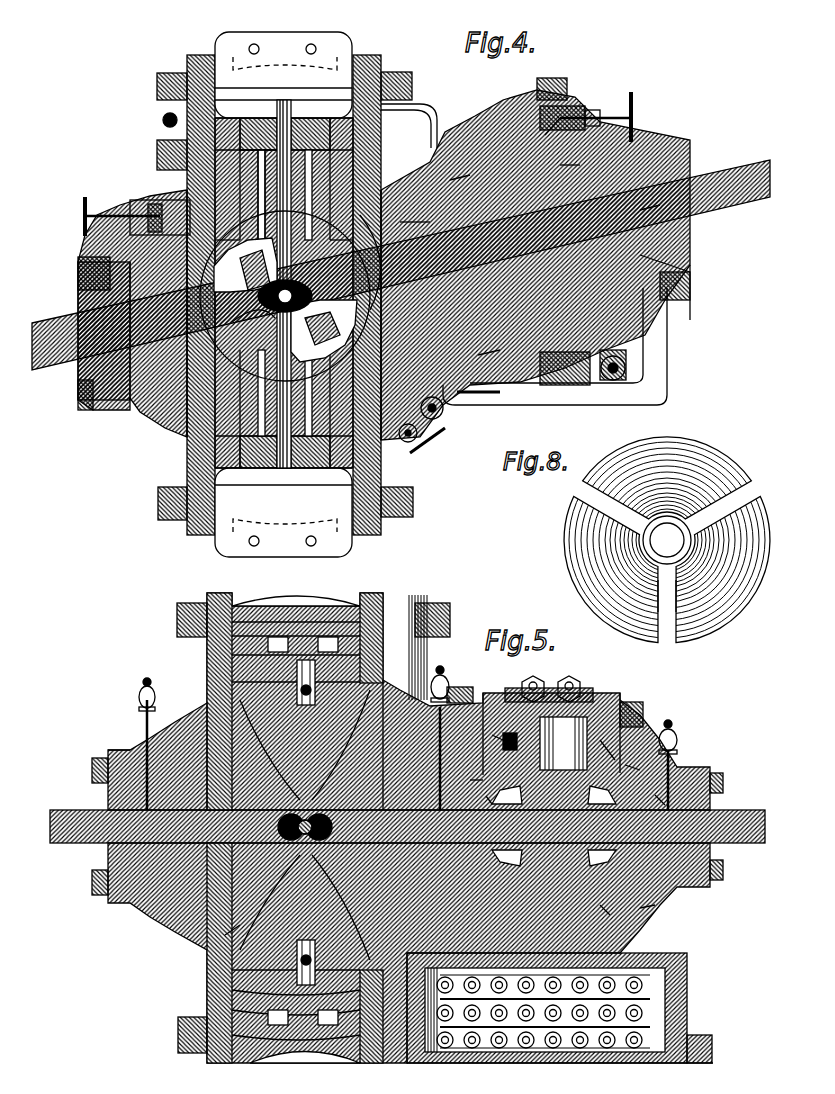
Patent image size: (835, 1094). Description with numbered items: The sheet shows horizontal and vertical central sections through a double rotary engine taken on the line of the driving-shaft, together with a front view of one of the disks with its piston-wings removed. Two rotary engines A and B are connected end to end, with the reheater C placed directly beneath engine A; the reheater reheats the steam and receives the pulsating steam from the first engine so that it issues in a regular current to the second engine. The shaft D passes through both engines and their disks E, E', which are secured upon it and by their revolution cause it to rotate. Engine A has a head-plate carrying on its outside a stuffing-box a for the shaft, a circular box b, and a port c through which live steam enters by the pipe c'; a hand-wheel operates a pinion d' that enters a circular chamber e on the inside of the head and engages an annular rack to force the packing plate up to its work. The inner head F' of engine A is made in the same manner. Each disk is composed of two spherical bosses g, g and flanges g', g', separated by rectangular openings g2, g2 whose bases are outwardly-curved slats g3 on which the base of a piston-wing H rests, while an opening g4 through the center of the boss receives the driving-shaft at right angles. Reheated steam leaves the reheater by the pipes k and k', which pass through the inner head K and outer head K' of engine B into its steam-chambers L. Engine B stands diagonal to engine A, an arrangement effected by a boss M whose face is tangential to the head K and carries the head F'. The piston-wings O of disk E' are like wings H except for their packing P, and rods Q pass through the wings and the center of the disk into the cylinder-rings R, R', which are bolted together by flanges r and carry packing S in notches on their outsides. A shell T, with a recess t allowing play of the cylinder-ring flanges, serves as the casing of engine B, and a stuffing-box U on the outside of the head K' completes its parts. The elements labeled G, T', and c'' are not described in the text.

In FIG. 4, the rotary engine A is at (566, 241).
In FIG. 5, the rotary engine A is at (551, 711).
In FIG. 4, the rotary engine B is at (384, 269).
In FIG. 5, the rotary engine B is at (407, 814).
In FIG. 5, the reheater C is at (560, 1008).
In FIG. 4, the shaft D is at (401, 265).
In FIG. 5, the shaft D is at (407, 826).
In FIG. 4, the disk E is at (366, 277).
In FIG. 8, the disk E is at (534, 513).
In FIG. 5, the disk E is at (305, 745).
In FIG. 4, the disk E' is at (250, 349).
In FIG. 5, the disk E' is at (305, 868).
In FIG. 5, the spindle G is at (306, 822).
In FIG. 4, the piston-wing H is at (489, 357).
In FIG. 5, the piston-wing H is at (545, 743).
In FIG. 4, the inner head K is at (363, 296).
In FIG. 5, the inner head K is at (393, 797).
In FIG. 4, the outer head K' is at (197, 299).
In FIG. 5, the outer head K' is at (198, 808).
In FIG. 4, the steam-chamber L is at (104, 331).
In FIG. 5, the steam-chamber L is at (119, 805).
In FIG. 4, the boss M is at (408, 265).
In FIG. 5, the boss M is at (466, 837).
In FIG. 4, the piston-wing O is at (284, 276).
In FIG. 4, the packing P is at (284, 289).
In FIG. 4, the rod Q is at (284, 295).
In FIG. 4, the cylinder-ring R is at (275, 295).
In FIG. 5, the cylinder-ring R' is at (296, 829).
In FIG. 4, the packing S is at (284, 295).
In FIG. 5, the shell T is at (296, 826).
In FIG. 4, the end cap T' is at (283, 294).
In FIG. 5, the stuffing-box U is at (226, 934).
In FIG. 4, the inner head F' is at (452, 244).
In FIG. 5, the inner head F' is at (550, 820).
In FIG. 4, the stuffing-box a is at (647, 206).
In FIG. 5, the stuffing-box a is at (656, 824).
In FIG. 4, the circular box b is at (604, 211).
In FIG. 5, the circular box b is at (626, 819).
In FIG. 4, the port c is at (595, 100).
In FIG. 5, the port c is at (603, 904).
In FIG. 5, the pipe c' is at (647, 906).
In FIG. 4, the valve nut c'' is at (553, 128).
In FIG. 4, the pinion d' is at (295, 175).
In FIG. 4, the circular chamber e is at (559, 280).
In FIG. 5, the circular chamber e is at (551, 796).
In FIG. 4, the spherical boss g is at (393, 238).
In FIG. 8, the spherical boss g is at (667, 540).
In FIG. 8, the flange g' is at (657, 540).
In FIG. 8, the rectangular opening g2 is at (678, 565).
In FIG. 4, the slat g3 is at (285, 300).
In FIG. 8, the slat g3 is at (670, 563).
In FIG. 5, the slat g3 is at (554, 823).
In FIG. 8, the opening g4 is at (667, 540).
In FIG. 4, the pipe k is at (449, 422).
In FIG. 4, the pipe k' is at (298, 124).
In FIG. 5, the pipe k' is at (357, 718).
In FIG. 4, the flange r is at (284, 294).
In FIG. 5, the flange r is at (303, 831).
In FIG. 5, the recess t is at (408, 738).